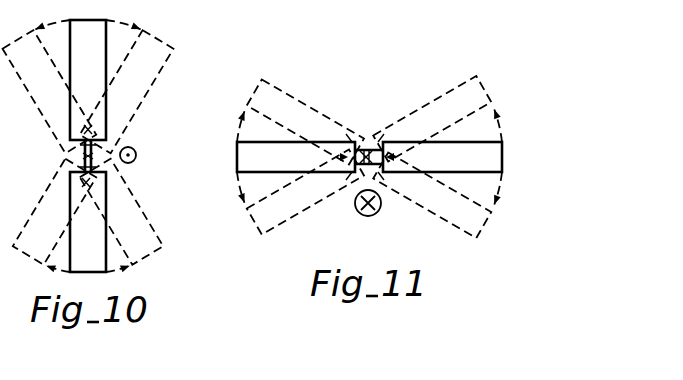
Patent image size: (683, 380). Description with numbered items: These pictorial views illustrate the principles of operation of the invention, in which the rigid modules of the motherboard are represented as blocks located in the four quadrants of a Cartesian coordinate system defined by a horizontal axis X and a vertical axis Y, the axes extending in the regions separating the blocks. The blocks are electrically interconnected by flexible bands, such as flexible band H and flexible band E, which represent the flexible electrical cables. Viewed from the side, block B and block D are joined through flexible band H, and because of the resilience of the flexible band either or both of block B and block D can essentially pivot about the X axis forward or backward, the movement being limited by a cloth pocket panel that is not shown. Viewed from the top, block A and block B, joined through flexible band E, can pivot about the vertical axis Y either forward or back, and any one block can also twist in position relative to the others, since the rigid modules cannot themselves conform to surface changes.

In FIG. 10, the block B is at (98, 84).
In FIG. 11, the block B is at (502, 157).
In FIG. 10, the block D is at (98, 252).
In FIG. 10, the flexible band H is at (80, 158).
In FIG. 10, the horizontal axis X is at (139, 156).
In FIG. 11, the horizontal axis X is at (368, 203).
In FIG. 11, the block A is at (239, 157).
In FIG. 11, the flexible band E is at (364, 142).
In FIG. 11, the vertical axis Y is at (367, 234).